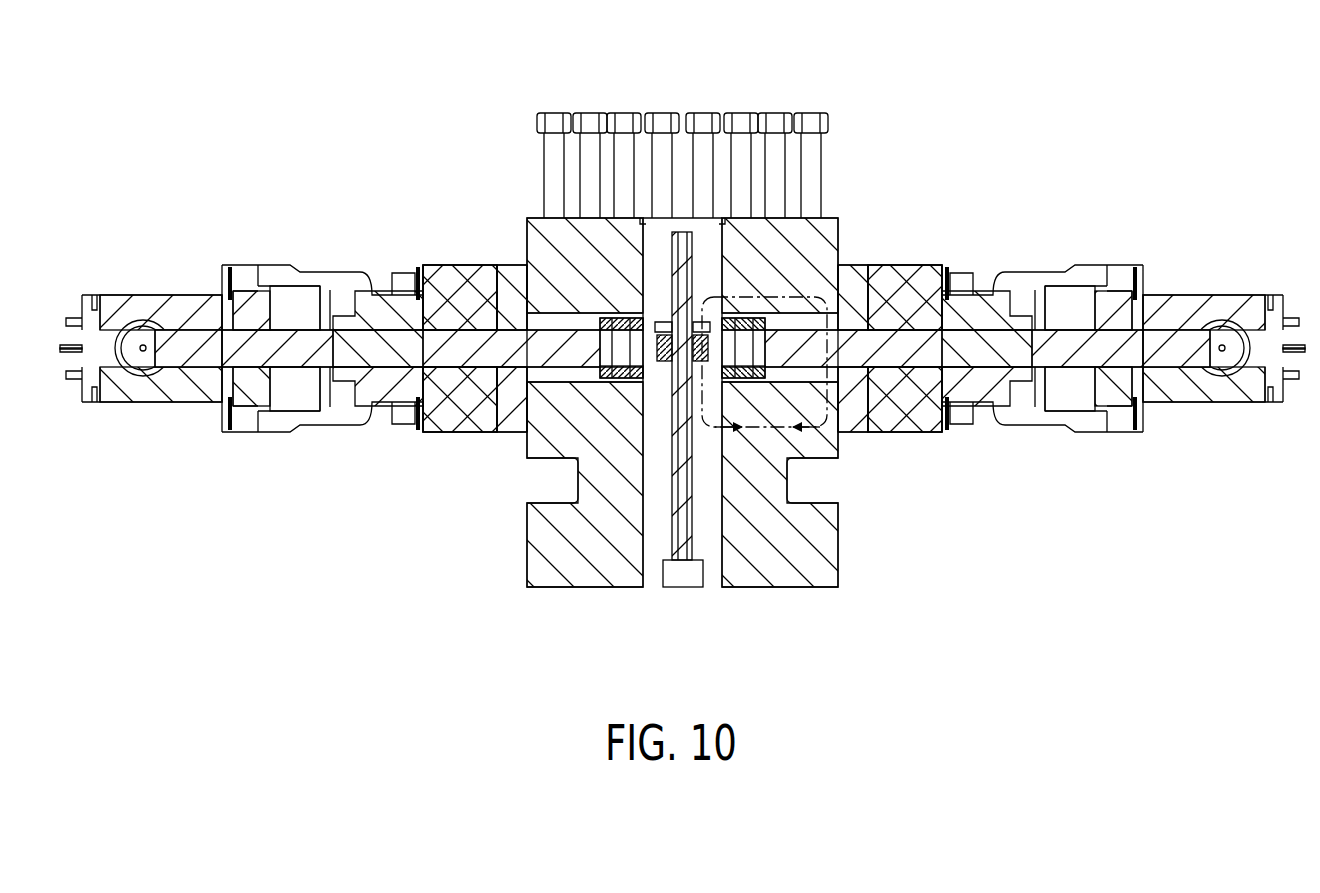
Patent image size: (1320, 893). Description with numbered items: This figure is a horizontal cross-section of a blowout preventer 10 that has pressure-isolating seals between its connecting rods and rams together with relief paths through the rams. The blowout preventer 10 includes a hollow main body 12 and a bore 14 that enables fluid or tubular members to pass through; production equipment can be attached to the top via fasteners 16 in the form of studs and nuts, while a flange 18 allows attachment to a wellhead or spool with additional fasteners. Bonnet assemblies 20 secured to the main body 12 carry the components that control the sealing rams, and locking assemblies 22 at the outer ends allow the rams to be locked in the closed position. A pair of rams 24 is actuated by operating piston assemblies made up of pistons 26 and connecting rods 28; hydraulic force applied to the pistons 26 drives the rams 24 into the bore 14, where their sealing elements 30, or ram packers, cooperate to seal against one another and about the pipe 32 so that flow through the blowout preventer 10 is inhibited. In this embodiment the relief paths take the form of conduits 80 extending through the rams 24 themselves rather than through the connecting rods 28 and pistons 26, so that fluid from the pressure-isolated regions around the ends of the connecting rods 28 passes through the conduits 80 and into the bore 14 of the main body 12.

The blowout preventer 10 is at (183, 158).
The main body 12 is at (824, 455).
The bore 14 is at (655, 265).
The fasteners 16 is at (695, 155).
The flange 18 is at (837, 565).
The bonnet assemblies 20 is at (403, 256).
The locking assemblies 22 is at (122, 288).
The rams 24 is at (618, 385).
The pistons 26 is at (335, 400).
The connecting rods 28 is at (480, 380).
The sealing elements 30 is at (665, 322).
The pipe 32 is at (695, 283).
The conduits 80 is at (630, 380).